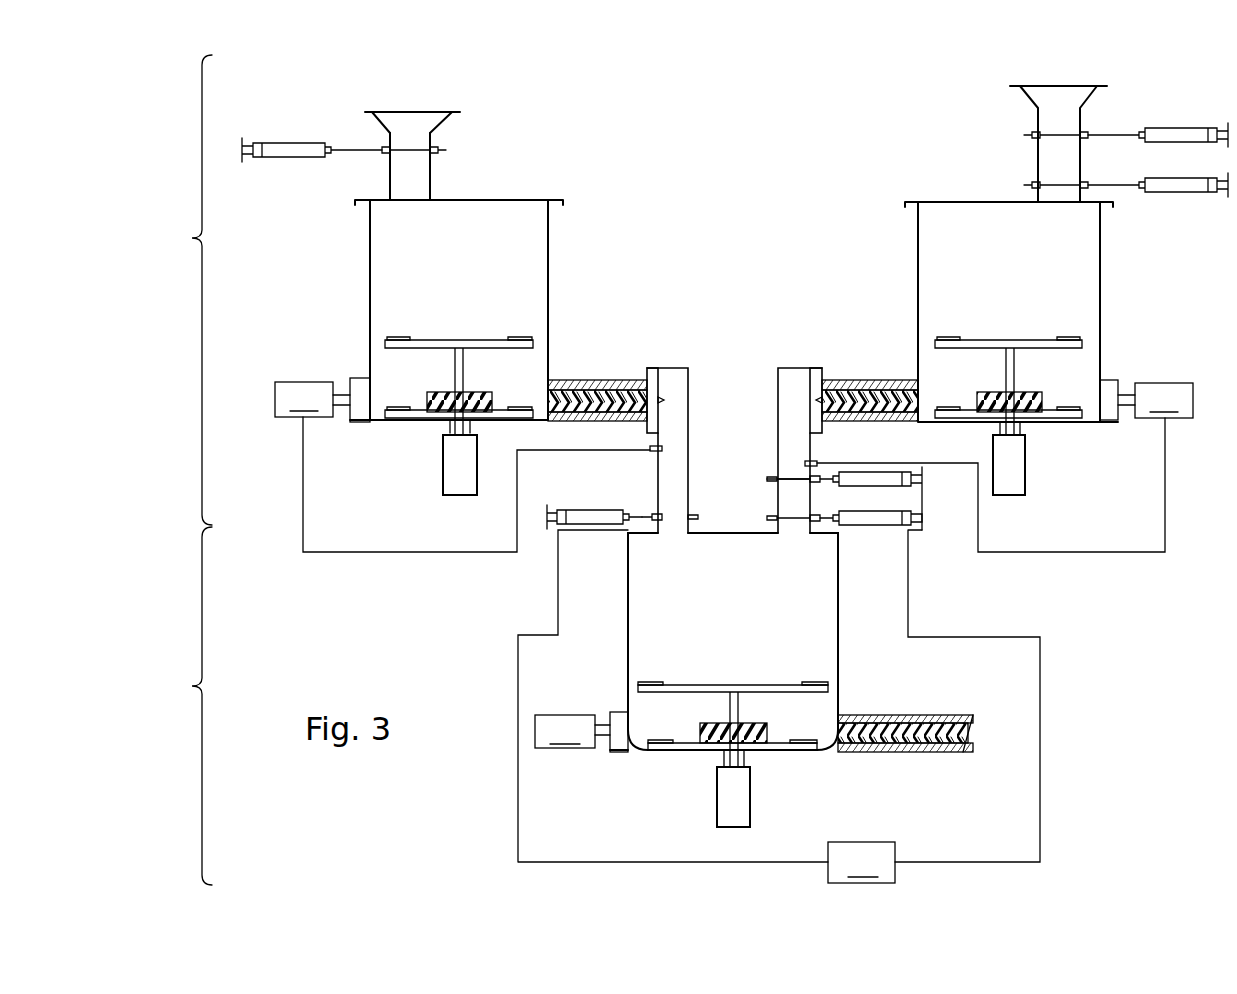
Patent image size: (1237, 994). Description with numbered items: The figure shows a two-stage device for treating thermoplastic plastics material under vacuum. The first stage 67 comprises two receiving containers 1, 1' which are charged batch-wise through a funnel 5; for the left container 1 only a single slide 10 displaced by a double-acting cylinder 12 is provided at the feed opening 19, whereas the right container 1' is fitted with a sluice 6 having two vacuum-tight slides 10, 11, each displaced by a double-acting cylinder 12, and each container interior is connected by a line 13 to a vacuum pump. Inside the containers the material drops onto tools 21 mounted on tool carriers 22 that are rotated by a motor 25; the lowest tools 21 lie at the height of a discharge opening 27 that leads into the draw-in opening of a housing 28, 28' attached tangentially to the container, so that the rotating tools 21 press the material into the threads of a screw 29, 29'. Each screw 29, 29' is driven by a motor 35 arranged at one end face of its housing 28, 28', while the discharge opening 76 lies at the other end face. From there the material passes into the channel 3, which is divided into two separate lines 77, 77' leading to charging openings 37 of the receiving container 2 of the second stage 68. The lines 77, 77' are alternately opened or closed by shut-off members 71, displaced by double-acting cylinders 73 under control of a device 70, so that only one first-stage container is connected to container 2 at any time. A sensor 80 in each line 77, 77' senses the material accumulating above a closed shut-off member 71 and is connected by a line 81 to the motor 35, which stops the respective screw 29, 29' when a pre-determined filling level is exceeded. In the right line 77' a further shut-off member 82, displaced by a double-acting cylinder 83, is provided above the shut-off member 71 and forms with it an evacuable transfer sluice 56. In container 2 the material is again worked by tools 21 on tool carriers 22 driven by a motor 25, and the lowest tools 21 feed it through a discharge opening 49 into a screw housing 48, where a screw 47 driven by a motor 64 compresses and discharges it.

The receiving container 1 is at (430, 316).
The receiving container 1' is at (981, 260).
The receiving container 2 is at (615, 658).
The channel 3 is at (753, 307).
The funnel 5 is at (407, 120).
The sluice 6 is at (1038, 155).
The slide 10 is at (415, 148).
The slide 11 is at (1058, 185).
The double-acting cylinder 12 is at (287, 142).
The line 13 is at (1175, 187).
The feed opening 19 is at (412, 197).
The tools 21 is at (402, 338).
The tool carrier 22 is at (445, 348).
The motor 25 is at (458, 467).
The discharge opening 27 is at (432, 412).
The housing 28 is at (597, 369).
The housing 28' is at (862, 369).
The screw 29 is at (607, 364).
The screw 29' is at (870, 364).
The motor 35 is at (734, 400).
The charging opening 37 is at (682, 530).
The screw 47 is at (880, 748).
The screw housing 48 is at (930, 748).
The discharge opening 49 is at (773, 738).
The transfer sluice 56 is at (792, 502).
The motor 64 is at (581, 732).
The first stage 67 is at (186, 290).
The second stage 68 is at (186, 706).
The device 70 is at (779, 706).
The shut-off member 71 is at (642, 520).
The double-acting cylinder 73 is at (582, 526).
The discharge opening 76 is at (658, 398).
The line 77 is at (607, 479).
The line 77' is at (864, 447).
The sensor 80 is at (807, 462).
The line 81 is at (342, 552).
The shut-off member 82 is at (790, 477).
The double-acting cylinder 83 is at (903, 488).